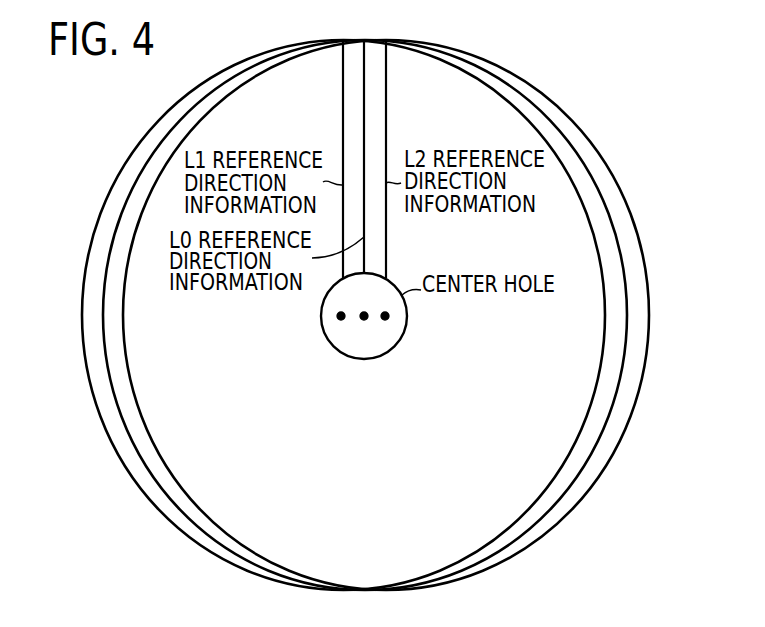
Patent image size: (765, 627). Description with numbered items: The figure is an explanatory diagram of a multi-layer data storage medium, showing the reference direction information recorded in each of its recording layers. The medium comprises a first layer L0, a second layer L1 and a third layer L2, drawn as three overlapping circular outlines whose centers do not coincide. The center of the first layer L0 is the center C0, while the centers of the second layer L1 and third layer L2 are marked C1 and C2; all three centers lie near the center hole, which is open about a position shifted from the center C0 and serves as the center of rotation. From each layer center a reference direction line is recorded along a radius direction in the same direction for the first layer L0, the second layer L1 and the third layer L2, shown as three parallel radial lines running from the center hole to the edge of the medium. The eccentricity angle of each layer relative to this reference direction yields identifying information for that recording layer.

The first layer L0 is at (588, 163).
The second layer L1 is at (126, 472).
The third layer L2 is at (604, 470).
The center of L0 layer C0 is at (364, 320).
The center C1 is at (341, 316).
The center C2 is at (385, 316).